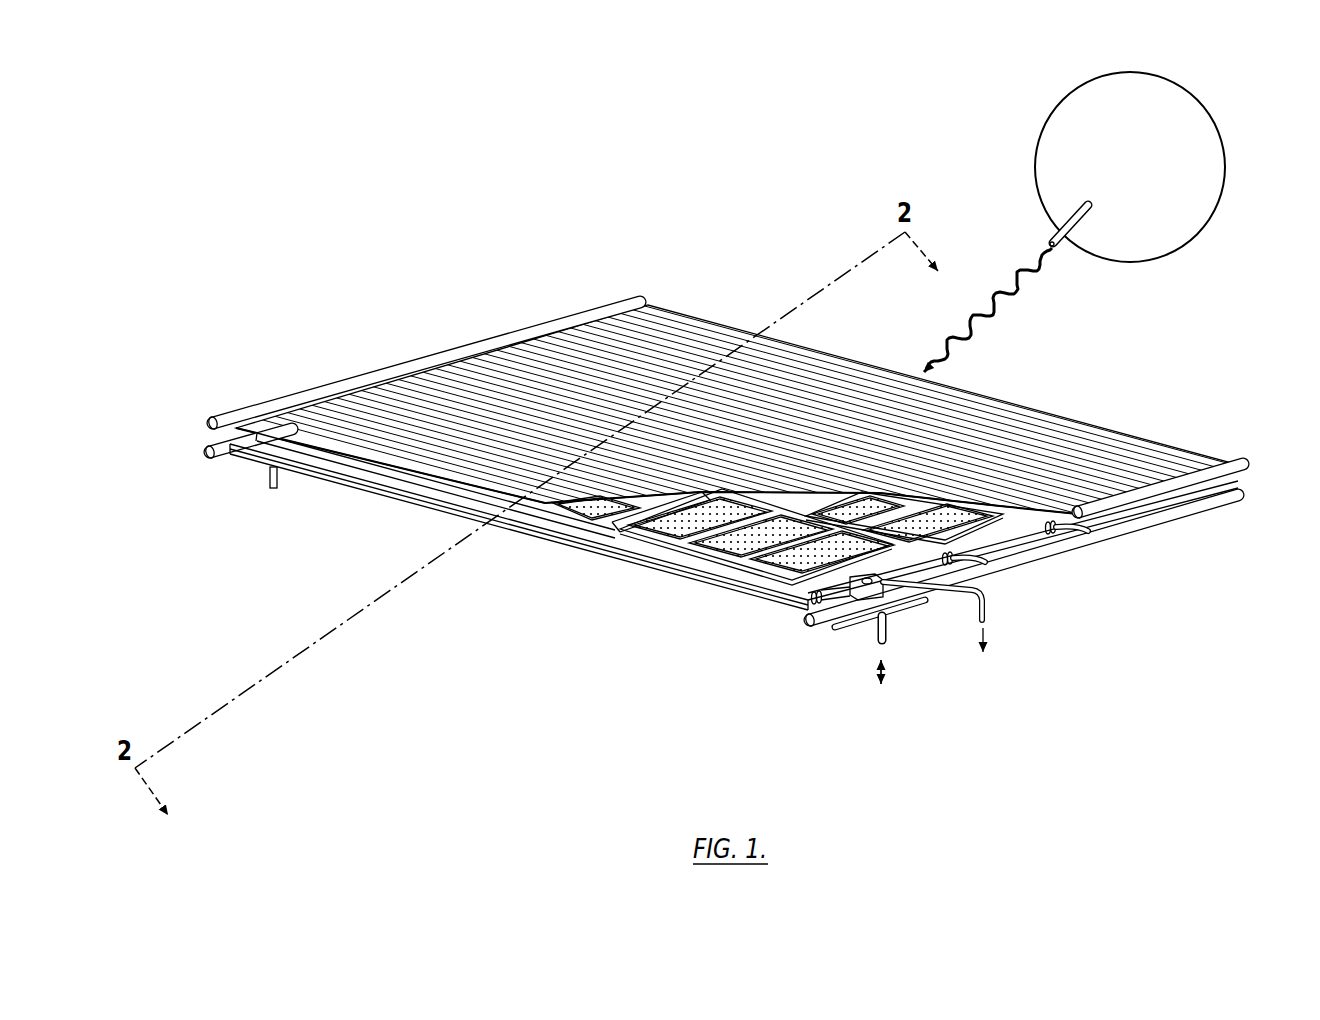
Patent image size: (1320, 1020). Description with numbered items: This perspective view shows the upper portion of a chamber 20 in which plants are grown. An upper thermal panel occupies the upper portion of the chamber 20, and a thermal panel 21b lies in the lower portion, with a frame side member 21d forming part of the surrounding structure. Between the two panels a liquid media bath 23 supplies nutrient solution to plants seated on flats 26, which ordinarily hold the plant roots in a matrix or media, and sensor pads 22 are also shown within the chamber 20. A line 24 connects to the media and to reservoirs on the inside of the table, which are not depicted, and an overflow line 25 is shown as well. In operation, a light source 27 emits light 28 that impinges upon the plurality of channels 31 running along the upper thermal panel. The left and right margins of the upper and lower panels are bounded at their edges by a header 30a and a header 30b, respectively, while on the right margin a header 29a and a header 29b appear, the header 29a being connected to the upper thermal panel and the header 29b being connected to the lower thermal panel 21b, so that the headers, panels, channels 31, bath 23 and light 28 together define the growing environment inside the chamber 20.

The chamber 20 is at (840, 178).
The channels 31 is at (634, 372).
The header 30a is at (240, 408).
The header 30b is at (230, 449).
The header 29a is at (1236, 462).
The header 29b is at (1203, 503).
The thermal panel 21b is at (616, 546).
The frame side member 21d is at (455, 488).
The sensor pads 22 is at (606, 522).
The liquid media bath 23 is at (720, 582).
The line 24 is at (876, 644).
The overflow line 25 is at (993, 597).
The flats 26 is at (960, 534).
The light source 27 is at (1215, 210).
The light 28 is at (1038, 264).